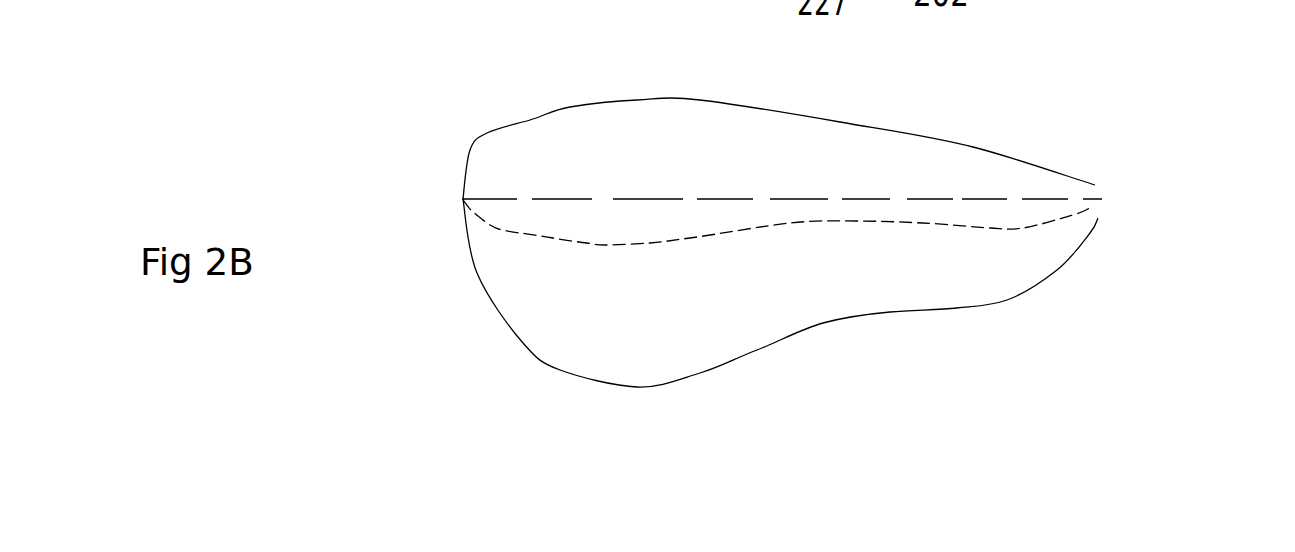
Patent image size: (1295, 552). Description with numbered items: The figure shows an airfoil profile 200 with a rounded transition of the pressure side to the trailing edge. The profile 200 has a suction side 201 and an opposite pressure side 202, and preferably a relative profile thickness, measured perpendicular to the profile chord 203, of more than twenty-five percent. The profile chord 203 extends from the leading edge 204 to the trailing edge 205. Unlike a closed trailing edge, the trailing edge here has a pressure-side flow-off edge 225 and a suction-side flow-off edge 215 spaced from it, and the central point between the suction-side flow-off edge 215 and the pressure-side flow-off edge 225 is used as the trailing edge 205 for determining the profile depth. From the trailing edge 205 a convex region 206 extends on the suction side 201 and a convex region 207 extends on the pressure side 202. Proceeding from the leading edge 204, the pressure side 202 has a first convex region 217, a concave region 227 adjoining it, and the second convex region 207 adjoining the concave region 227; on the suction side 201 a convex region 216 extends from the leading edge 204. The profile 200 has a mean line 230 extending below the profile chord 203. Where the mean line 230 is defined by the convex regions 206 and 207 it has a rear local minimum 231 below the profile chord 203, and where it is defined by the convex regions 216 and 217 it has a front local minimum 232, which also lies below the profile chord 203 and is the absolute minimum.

The profile 200 is at (1128, 118).
The suction side 201 is at (973, 143).
The pressure side 202 is at (945, 308).
The profile chord 203 is at (596, 197).
The leading edge 204 is at (462, 200).
The trailing edge 205 is at (1105, 200).
The convex region on the suction side 206 is at (1027, 153).
The convex region on the pressure side 207 is at (1068, 268).
The suction-side flow-off edge 215 is at (1098, 183).
The convex region 216 is at (530, 122).
The first convex region 217 is at (587, 380).
The pressure-side flow-off edge 225 is at (1100, 223).
The concave region 227 is at (818, 327).
The mean line 230 is at (502, 230).
The rear local minimum 231 is at (1025, 232).
The front local minimum 232 is at (603, 245).